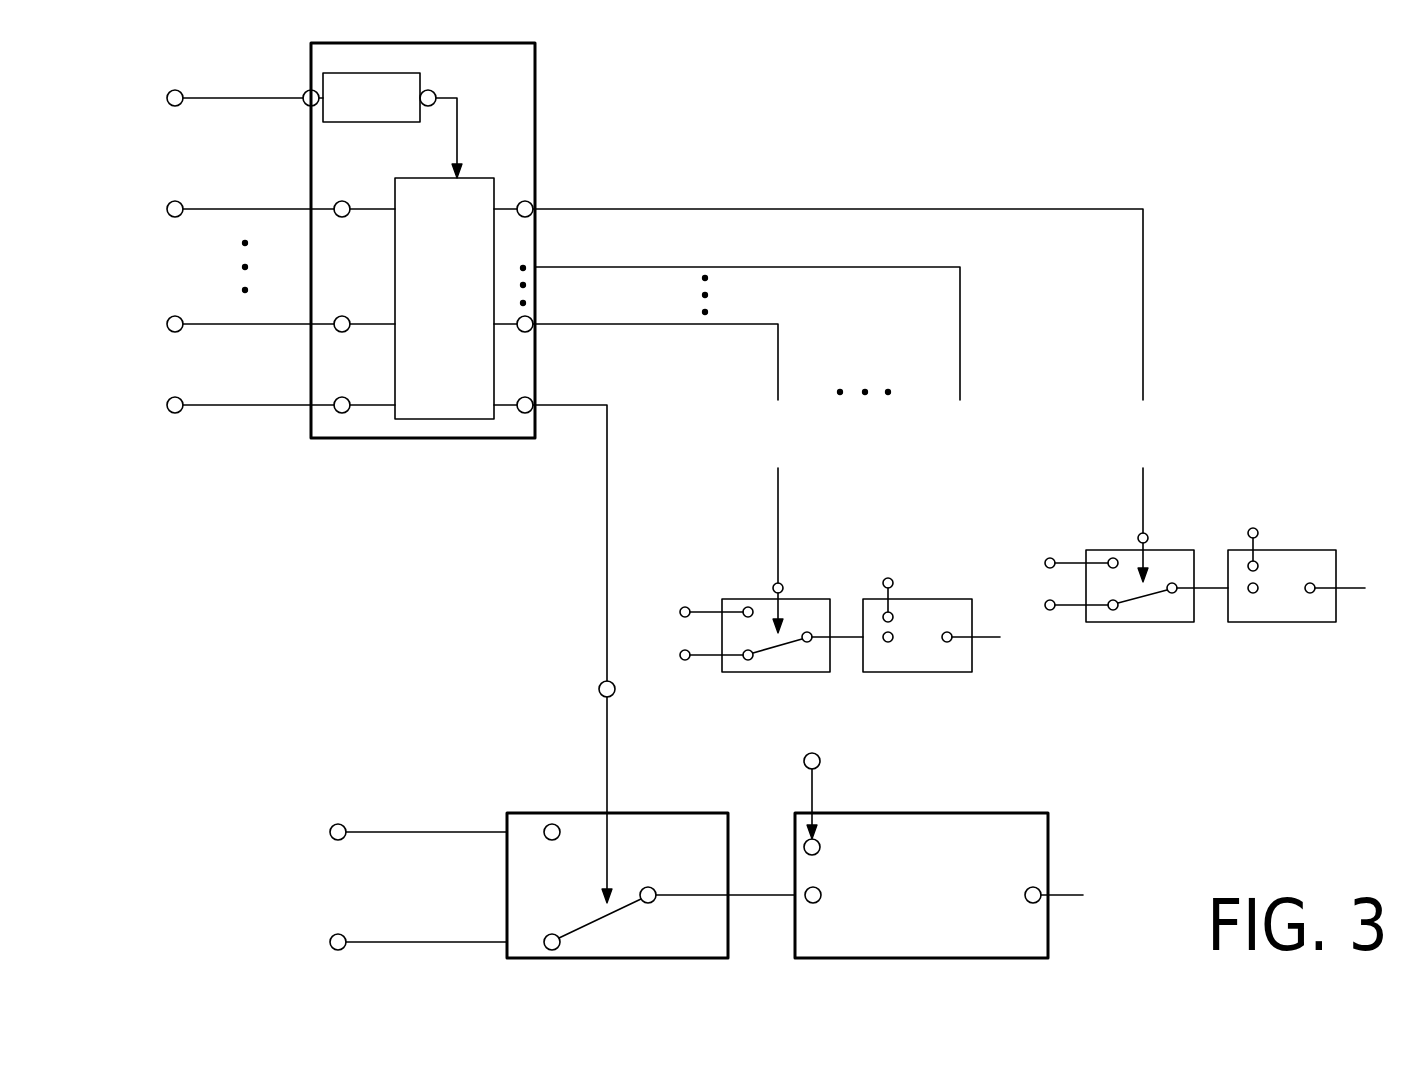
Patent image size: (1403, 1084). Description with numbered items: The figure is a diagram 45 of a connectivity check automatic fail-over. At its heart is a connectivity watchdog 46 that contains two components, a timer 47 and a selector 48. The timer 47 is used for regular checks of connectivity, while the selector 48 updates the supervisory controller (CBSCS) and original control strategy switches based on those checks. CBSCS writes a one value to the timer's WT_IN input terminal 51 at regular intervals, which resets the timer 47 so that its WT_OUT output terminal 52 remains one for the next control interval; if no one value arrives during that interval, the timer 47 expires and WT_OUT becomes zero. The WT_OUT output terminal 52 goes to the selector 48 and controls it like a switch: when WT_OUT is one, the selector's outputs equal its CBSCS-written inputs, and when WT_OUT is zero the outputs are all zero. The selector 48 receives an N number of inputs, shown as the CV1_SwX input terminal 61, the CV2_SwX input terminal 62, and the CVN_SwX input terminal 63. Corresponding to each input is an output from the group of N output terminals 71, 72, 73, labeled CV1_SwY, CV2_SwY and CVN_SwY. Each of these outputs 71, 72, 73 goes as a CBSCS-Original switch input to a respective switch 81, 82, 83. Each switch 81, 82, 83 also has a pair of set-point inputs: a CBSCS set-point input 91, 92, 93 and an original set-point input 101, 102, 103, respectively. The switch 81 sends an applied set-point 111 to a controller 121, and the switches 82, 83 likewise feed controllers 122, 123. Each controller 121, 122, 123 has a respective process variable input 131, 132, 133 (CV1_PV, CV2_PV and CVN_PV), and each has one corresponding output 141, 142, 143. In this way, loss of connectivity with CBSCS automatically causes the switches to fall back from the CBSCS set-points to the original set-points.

The diagram 45 is at (1018, 116).
The connectivity watchdog 46 is at (536, 112).
The timer 47 is at (370, 122).
The selector 48 is at (482, 178).
The WT_IN input terminal 51 is at (278, 98).
The WT_OUT output terminal 52 is at (457, 145).
The CV1_SwX input terminal 61 is at (278, 405).
The CV2_SwX input terminal 62 is at (278, 324).
The CVN_SwX input terminal 63 is at (278, 209).
The CV1_SwY output terminal 71 is at (607, 492).
The CV2_SwY output terminal 72 is at (778, 360).
The CVN_SwY output terminal 73 is at (1143, 247).
The switch 81 is at (692, 813).
The switch 82 is at (810, 599).
The switch 83 is at (1175, 550).
The CV1_SPX input 91 is at (472, 832).
The CV2_SPX input 92 is at (700, 612).
The CVN_SPX input 93 is at (1065, 563).
The CV1_SP input 101 is at (472, 942).
The CV2_SP input 102 is at (706, 655).
The CVN_SP input 103 is at (1070, 605).
The set-point 111 is at (693, 895).
The controller 121 is at (1012, 813).
The controller 122 is at (940, 599).
The controller 123 is at (1303, 550).
The CV1_PV input 131 is at (812, 788).
The CV2_PV input 132 is at (888, 578).
The CVN_PV input 133 is at (1253, 528).
The output 141 is at (1073, 895).
The output 142 is at (985, 637).
The output 143 is at (1350, 588).